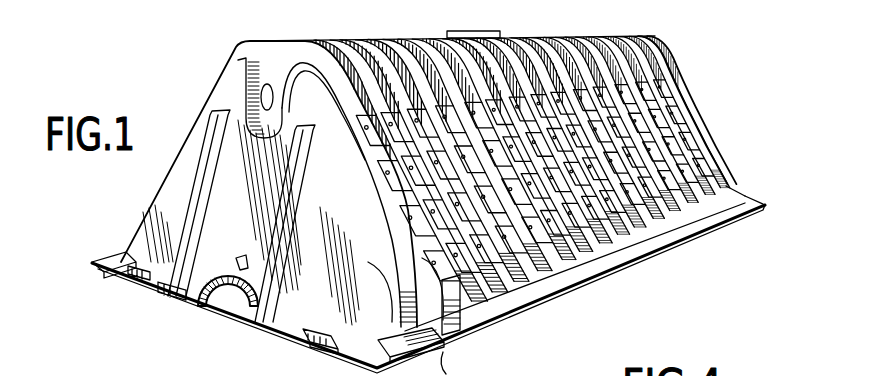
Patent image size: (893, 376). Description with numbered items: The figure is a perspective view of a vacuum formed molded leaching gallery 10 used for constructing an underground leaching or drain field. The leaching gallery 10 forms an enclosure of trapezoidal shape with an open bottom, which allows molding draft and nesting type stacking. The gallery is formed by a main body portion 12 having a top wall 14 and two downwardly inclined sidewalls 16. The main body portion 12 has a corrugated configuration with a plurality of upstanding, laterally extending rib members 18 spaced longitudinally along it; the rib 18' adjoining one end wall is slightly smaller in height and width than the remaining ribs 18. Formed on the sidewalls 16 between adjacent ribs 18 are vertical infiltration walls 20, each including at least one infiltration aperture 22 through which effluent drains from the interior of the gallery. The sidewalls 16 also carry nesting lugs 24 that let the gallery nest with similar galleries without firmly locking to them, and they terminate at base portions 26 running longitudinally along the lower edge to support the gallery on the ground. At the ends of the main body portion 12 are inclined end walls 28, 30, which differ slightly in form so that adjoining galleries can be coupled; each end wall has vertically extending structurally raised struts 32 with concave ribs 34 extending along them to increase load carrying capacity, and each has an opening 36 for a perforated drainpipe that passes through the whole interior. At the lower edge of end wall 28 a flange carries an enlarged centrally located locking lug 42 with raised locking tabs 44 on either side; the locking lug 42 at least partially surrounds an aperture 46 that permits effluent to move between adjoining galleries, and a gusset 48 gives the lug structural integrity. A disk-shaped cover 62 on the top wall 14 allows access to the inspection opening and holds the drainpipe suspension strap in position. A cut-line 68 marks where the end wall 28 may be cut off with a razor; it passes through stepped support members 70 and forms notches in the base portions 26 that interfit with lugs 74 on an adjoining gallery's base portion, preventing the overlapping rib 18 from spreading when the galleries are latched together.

The leaching gallery 10 is at (234, 37).
The main body portion 12 is at (378, 90).
The top wall 14 is at (318, 41).
The sidewalls 16 is at (215, 80).
The rib members 18 is at (522, 154).
The rib 18' is at (679, 108).
The infiltration walls 20 is at (652, 190).
The infiltration aperture 22 is at (440, 344).
The nesting lugs 24 is at (463, 313).
The base portions 26 is at (123, 248).
The end wall 28 is at (158, 259).
The end wall 30 is at (703, 158).
The struts 32 is at (188, 224).
The concave ribs 34 is at (293, 140).
The opening 36 is at (268, 84).
The locking lug 42 is at (180, 292).
The locking tabs 44 is at (135, 276).
The aperture 46 is at (222, 283).
The gusset 48 is at (240, 258).
The cover 62 is at (465, 31).
The cut-line 68 is at (456, 360).
The stepped support members 70 is at (366, 290).
The lugs 74 is at (736, 194).